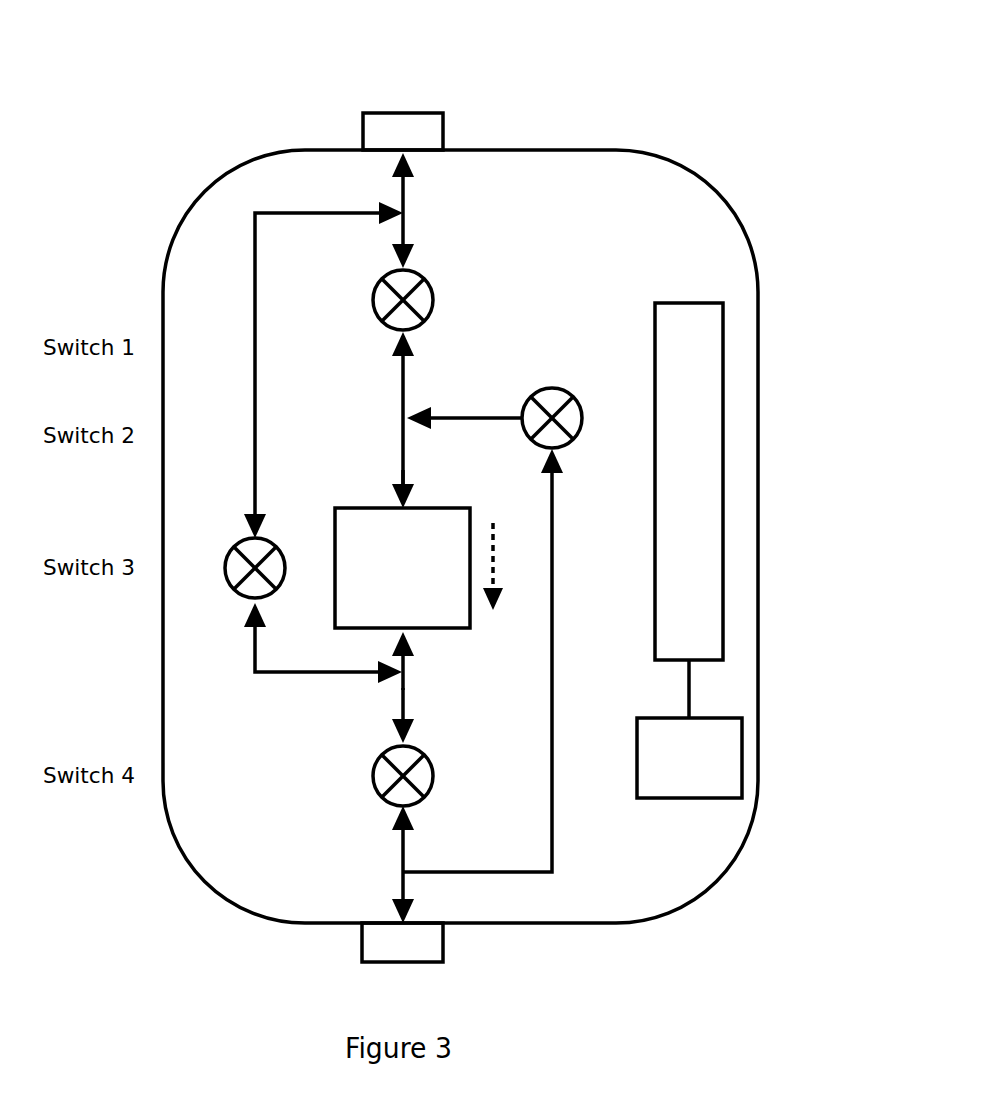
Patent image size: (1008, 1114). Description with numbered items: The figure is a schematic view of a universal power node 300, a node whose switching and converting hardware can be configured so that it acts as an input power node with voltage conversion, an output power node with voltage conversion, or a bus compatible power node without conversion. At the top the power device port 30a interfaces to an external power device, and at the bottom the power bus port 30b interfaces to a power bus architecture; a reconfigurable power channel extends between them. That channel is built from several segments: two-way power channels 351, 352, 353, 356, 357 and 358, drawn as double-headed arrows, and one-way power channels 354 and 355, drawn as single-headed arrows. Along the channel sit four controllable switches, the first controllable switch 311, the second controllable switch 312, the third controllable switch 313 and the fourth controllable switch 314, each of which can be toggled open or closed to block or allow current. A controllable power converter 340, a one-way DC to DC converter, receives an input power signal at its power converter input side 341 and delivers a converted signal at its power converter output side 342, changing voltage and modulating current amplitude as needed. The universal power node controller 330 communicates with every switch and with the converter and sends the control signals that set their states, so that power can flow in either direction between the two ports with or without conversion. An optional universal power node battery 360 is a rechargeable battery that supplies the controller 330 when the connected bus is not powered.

The universal power node 300 is at (126, 61).
The power device port 30a is at (512, 131).
The power bus port 30b is at (496, 942).
The controllable switch 1 311 is at (432, 293).
The controllable switch 2 312 is at (550, 390).
The controllable switch 3 313 is at (226, 573).
The controllable switch 4 314 is at (377, 790).
The universal power node controller 330 is at (723, 612).
The controllable power converter 340 is at (442, 628).
The power converter input side 341 is at (405, 508).
The power converter output side 342 is at (405, 630).
The two-way power channel 351 is at (405, 200).
The two-way power channel 352 is at (255, 390).
The two-way power channel 353 is at (400, 450).
The one-way power channel 354 is at (500, 418).
The one-way power channel 355 is at (552, 557).
The two-way power channel 356 is at (310, 672).
The two-way power channel 357 is at (403, 688).
The two-way power channel 358 is at (403, 848).
The universal power node battery 360 is at (742, 757).